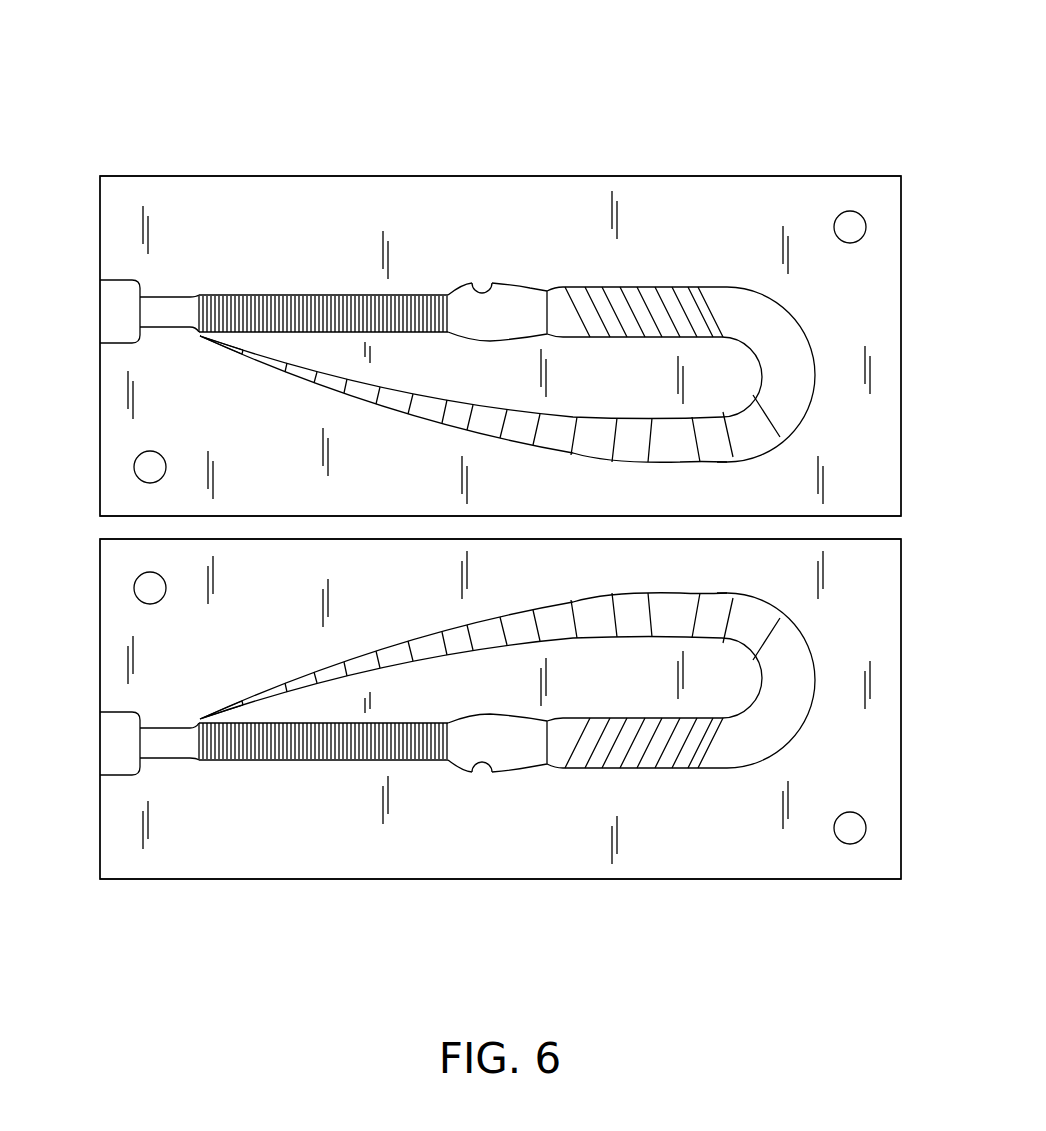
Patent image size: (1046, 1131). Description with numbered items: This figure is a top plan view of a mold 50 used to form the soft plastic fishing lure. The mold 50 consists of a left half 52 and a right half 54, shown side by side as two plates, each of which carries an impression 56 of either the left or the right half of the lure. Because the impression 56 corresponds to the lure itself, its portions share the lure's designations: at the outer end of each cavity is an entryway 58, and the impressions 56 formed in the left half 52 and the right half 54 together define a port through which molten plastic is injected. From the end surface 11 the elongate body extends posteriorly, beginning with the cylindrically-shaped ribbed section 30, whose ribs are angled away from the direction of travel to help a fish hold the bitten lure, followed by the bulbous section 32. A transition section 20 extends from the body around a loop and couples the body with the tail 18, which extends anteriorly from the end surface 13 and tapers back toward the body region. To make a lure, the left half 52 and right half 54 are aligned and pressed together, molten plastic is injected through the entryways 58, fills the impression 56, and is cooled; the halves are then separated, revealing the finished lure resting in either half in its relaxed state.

The mold 50 is at (470, 108).
The left half 52 is at (903, 738).
The right half 54 is at (903, 289).
The entryway 58 is at (118, 312).
The end surface 11 is at (197, 312).
The end surface 13 is at (200, 337).
The tail 18 is at (556, 438).
The transition section 20 is at (785, 408).
The ribbed section 30 is at (335, 308).
The bulbous section 32 is at (522, 318).
The impression 56 is at (493, 292).